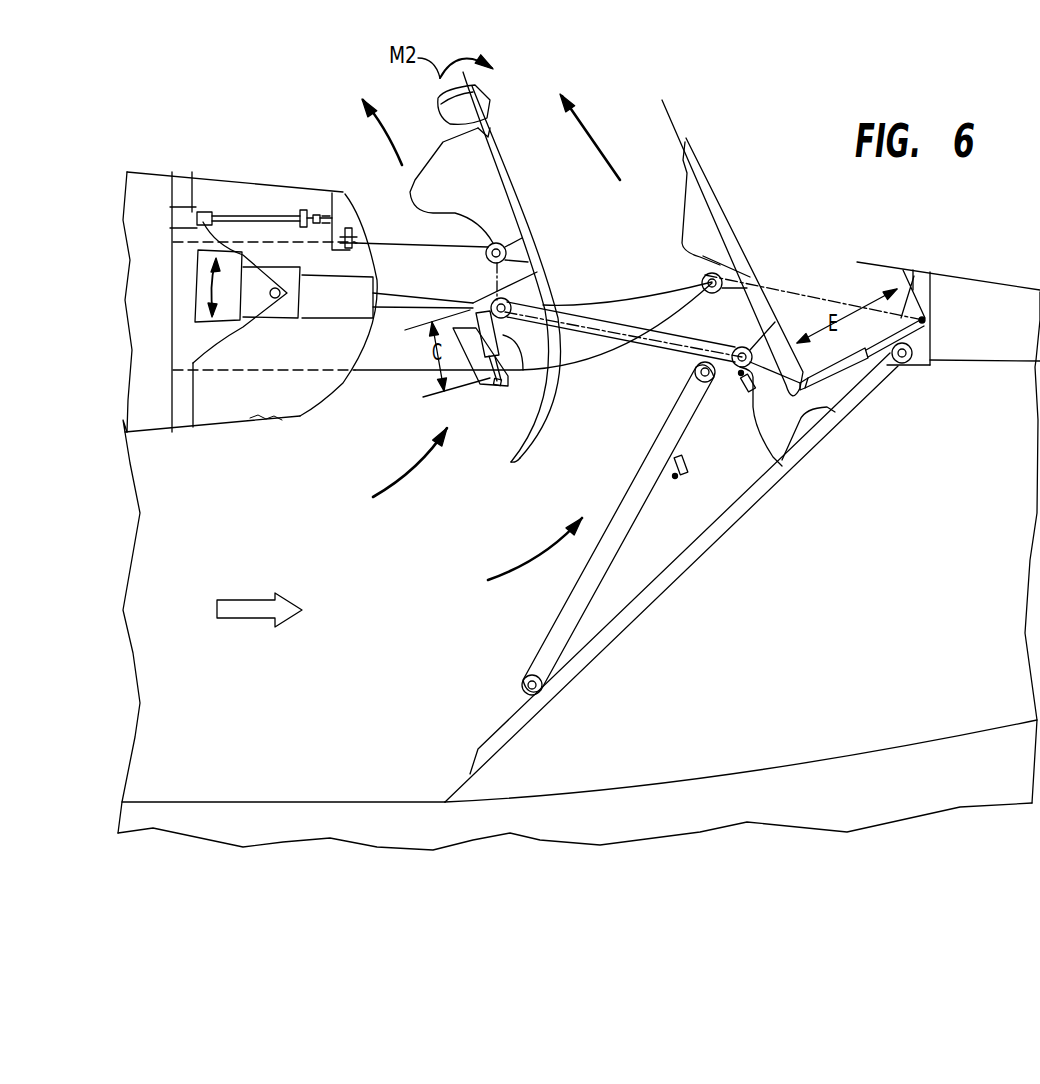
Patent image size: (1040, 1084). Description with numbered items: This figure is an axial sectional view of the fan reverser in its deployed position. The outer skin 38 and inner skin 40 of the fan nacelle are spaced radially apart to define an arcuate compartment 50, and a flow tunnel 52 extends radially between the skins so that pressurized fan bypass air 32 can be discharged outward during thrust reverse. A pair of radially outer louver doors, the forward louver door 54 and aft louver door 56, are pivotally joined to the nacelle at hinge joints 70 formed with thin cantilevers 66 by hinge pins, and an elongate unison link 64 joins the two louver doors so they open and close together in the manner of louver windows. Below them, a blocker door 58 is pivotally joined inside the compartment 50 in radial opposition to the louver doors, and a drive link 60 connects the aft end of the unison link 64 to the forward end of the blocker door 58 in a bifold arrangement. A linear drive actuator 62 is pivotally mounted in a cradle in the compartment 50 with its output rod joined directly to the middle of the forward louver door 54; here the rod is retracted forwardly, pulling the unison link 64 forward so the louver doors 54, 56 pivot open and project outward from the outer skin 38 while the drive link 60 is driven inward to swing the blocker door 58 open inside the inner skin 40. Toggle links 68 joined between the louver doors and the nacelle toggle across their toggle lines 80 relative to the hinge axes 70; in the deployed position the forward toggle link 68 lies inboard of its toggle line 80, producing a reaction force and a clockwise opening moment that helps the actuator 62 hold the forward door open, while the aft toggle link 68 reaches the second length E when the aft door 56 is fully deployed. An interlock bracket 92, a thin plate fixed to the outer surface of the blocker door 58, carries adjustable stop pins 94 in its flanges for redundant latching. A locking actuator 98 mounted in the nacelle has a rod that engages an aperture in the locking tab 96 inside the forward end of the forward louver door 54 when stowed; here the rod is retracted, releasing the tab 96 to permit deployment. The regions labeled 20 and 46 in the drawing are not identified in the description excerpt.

The ground 20 is at (946, 786).
The fan bypass air 32 is at (243, 600).
The outer skin 38 is at (963, 270).
The inner skin 40 is at (967, 367).
The vehicle body 46 is at (301, 718).
The compartment 50 is at (159, 306).
The flow tunnel 52 is at (599, 285).
The forward louver door 54 is at (515, 178).
The aft louver door 56 is at (723, 202).
The blocker door 58 is at (734, 538).
The drive link 60 is at (652, 494).
The drive actuator 62 is at (333, 320).
The unison link 64 is at (665, 342).
The cantilevers 66 is at (441, 276).
The toggle link 68 is at (847, 368).
The hinge joint 70 is at (496, 242).
The toggle line 80 is at (497, 279).
The interlock bracket 92 is at (739, 465).
The stop pins 94 is at (750, 372).
The locking tab 96 is at (462, 110).
The locking actuator 98 is at (203, 212).